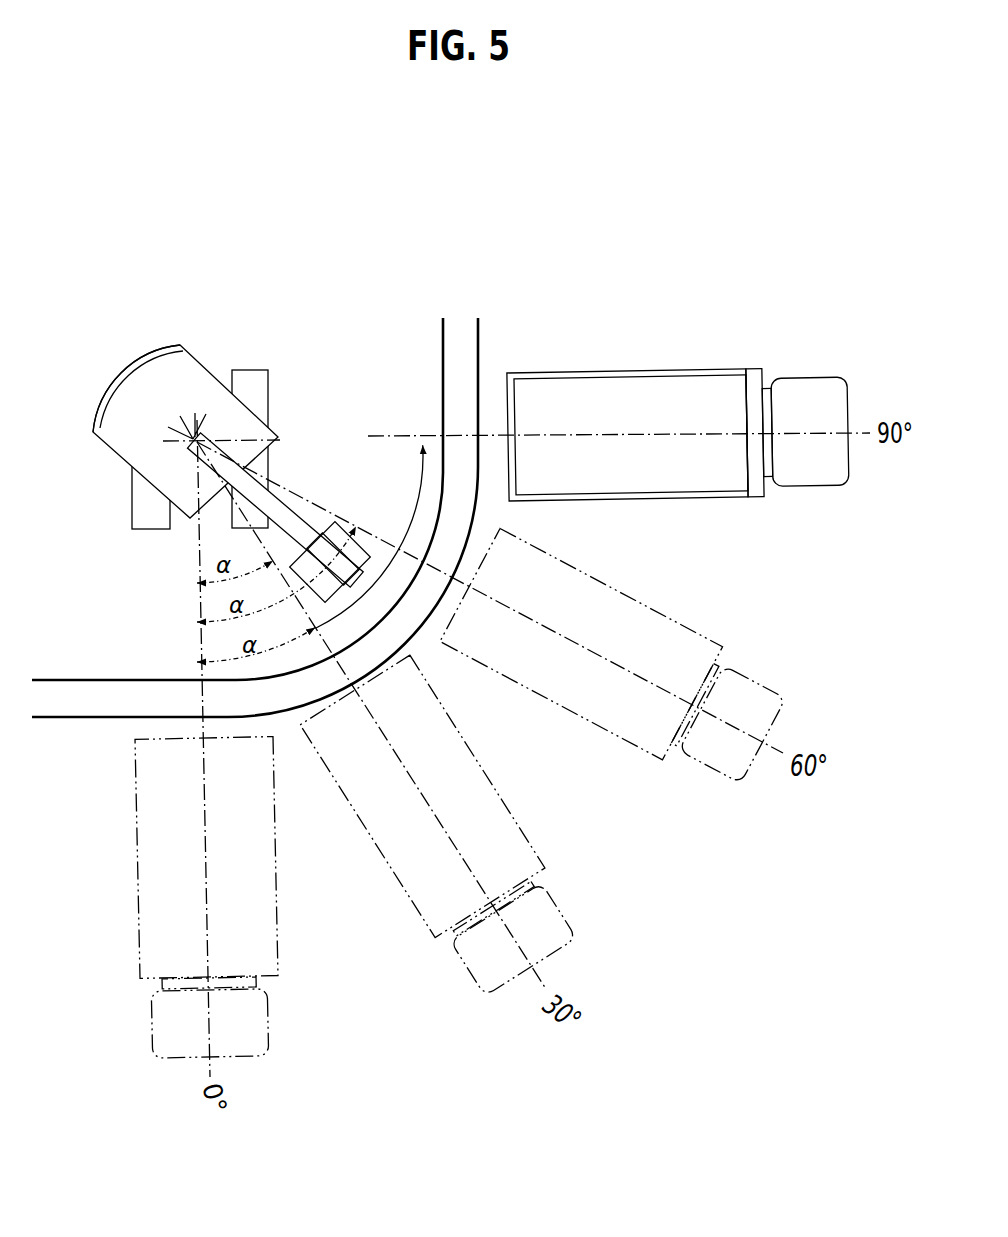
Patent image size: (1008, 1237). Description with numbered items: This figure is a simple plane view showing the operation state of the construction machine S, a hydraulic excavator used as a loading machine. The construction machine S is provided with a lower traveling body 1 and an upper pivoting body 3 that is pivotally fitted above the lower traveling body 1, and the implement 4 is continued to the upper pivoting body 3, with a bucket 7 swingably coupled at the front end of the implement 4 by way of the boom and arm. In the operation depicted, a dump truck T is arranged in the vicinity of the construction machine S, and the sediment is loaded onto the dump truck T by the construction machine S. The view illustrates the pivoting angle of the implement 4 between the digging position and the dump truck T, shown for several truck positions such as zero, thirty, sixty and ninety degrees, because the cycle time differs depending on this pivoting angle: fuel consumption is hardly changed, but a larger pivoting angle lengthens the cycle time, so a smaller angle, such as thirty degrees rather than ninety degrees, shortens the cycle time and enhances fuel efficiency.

The lower traveling body 1 is at (271, 403).
The upper pivoting body 3 is at (156, 344).
The implement 4 is at (300, 514).
The bucket 7 is at (337, 529).
The construction machine S is at (226, 336).
The dump truck T is at (624, 371).